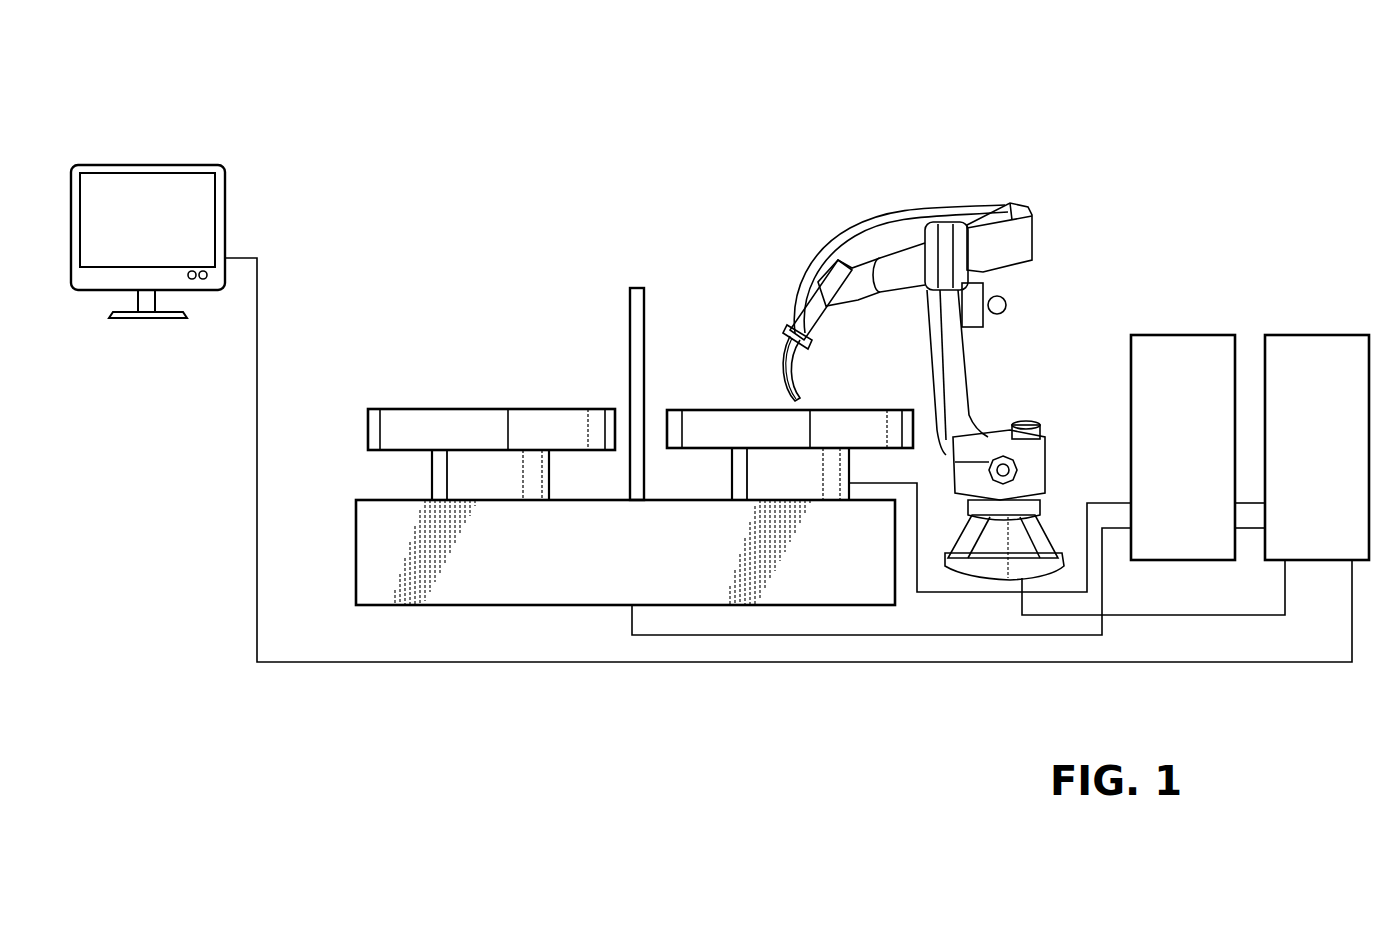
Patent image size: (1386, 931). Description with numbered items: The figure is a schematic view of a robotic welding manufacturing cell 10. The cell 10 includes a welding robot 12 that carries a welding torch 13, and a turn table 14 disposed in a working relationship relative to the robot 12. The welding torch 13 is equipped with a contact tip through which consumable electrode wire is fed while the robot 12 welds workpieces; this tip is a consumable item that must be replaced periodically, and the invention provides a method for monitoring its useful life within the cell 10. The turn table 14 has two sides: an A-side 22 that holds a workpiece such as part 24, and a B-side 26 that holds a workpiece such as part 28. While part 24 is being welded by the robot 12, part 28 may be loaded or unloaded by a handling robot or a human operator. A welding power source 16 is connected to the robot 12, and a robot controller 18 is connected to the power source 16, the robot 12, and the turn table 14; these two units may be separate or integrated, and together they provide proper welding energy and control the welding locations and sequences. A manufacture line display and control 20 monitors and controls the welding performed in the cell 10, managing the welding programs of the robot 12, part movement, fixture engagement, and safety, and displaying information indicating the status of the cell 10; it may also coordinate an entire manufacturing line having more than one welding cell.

The robotic welding manufacturing cell 10 is at (864, 135).
The welding robot 12 is at (1000, 212).
The welding torch 13 is at (783, 362).
The turn table 14 is at (367, 547).
The power source 16 is at (1177, 345).
The robot controller 18 is at (1292, 345).
The manufacture line display and control (MLDC) 20 is at (227, 197).
The A-side 22 is at (737, 478).
The part 24 is at (687, 418).
The B-side 26 is at (440, 478).
The part 28 is at (492, 418).